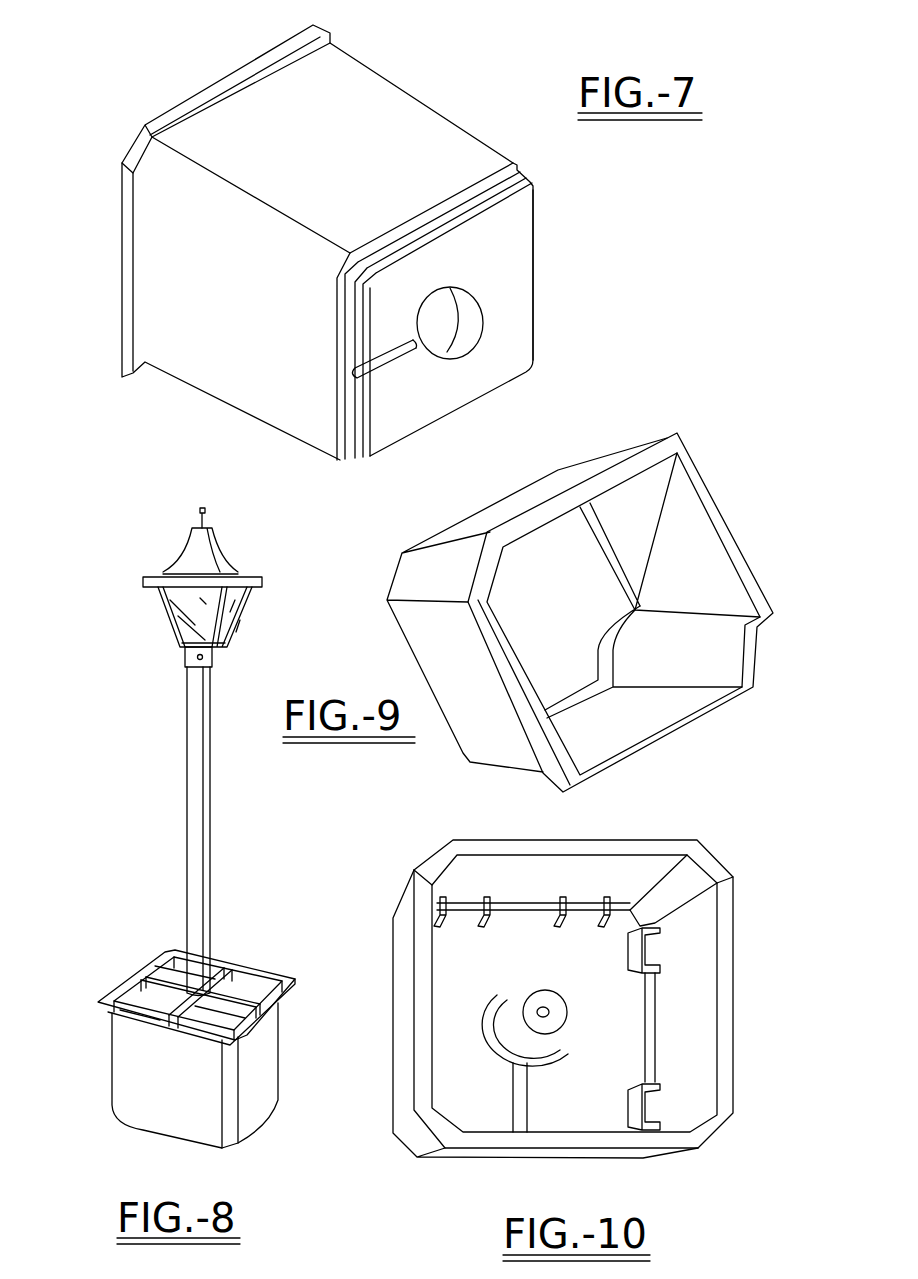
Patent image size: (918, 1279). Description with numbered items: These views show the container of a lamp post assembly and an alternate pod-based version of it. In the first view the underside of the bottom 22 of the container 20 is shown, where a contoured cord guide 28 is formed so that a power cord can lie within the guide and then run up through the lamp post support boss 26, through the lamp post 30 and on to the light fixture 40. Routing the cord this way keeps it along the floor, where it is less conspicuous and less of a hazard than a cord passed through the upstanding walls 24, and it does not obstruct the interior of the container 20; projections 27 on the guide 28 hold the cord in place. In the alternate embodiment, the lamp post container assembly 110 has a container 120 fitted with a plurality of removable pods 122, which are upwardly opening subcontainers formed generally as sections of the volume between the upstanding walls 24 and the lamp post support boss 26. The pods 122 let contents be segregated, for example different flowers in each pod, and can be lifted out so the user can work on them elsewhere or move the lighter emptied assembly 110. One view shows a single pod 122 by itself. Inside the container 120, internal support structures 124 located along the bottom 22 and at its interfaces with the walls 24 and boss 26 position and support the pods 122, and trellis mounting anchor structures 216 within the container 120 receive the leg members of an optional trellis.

In FIG. 7, the container 20 is at (402, 85).
In FIG. 7, the bottom 22 is at (503, 245).
In FIG. 10, the bottom 22 is at (462, 980).
In FIG. 7, the upstanding walls 24 is at (265, 105).
In FIG. 10, the upstanding walls 24 is at (697, 1007).
In FIG. 7, the lamp post support boss 26 is at (450, 327).
In FIG. 10, the lamp post support boss 26 is at (515, 1030).
In FIG. 7, the projections 27 is at (372, 368).
In FIG. 7, the contoured cord guide 28 is at (390, 355).
In FIG. 8, the lamp post 30 is at (187, 768).
In FIG. 8, the light fixture 40 is at (170, 622).
In FIG. 8, the lamp post container assembly 110 is at (160, 557).
In FIG. 8, the container 120 is at (157, 1135).
In FIG. 10, the container 120 is at (460, 1162).
In FIG. 8, the pods 122 is at (135, 973).
In FIG. 9, the pods 122 is at (718, 503).
In FIG. 10, the internal support structures 124 is at (493, 897).
In FIG. 10, the trellis mounting anchor structures 216 is at (655, 947).